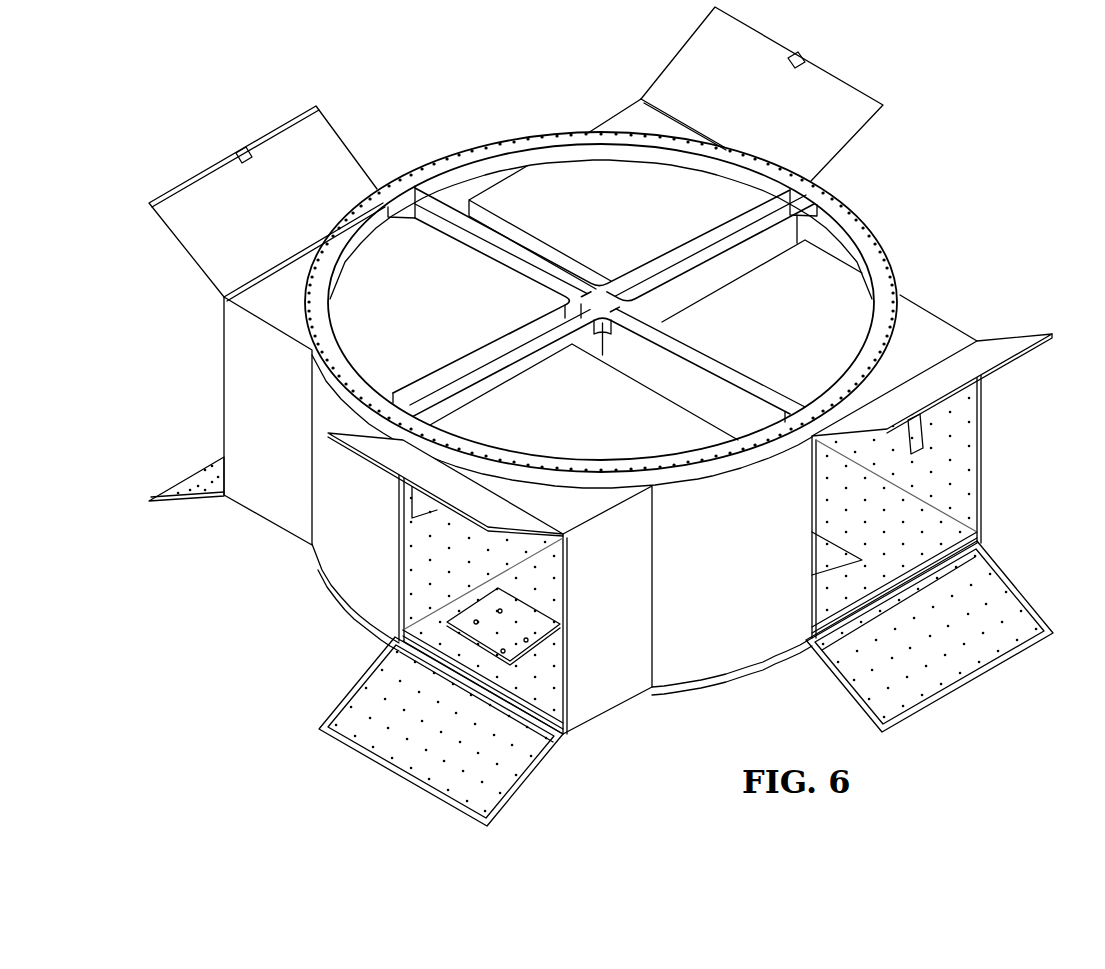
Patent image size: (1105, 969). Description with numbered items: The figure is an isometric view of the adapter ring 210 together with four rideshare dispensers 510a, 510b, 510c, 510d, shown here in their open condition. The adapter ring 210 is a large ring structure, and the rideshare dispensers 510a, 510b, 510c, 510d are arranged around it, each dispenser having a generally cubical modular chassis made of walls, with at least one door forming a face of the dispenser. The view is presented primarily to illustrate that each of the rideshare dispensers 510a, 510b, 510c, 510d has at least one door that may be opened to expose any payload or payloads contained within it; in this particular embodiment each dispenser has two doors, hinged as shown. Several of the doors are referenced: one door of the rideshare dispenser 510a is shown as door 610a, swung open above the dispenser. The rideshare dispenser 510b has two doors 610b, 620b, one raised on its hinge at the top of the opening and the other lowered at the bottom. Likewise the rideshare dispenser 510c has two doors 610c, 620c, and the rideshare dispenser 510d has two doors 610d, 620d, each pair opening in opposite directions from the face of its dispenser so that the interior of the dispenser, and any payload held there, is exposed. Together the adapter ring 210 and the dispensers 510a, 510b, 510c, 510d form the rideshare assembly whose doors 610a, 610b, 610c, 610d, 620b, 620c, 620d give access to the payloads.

The adapter ring 210 is at (934, 203).
The rideshare dispenser 510a is at (614, 118).
The rideshare dispenser 510b is at (940, 313).
The rideshare dispenser 510c is at (268, 520).
The rideshare dispenser 510d is at (602, 716).
The door 610a is at (850, 78).
The door 610b is at (1018, 332).
The door 610c is at (188, 178).
The door 610d is at (363, 466).
The door 620b is at (1020, 585).
The door 620c is at (174, 482).
The door 620d is at (533, 782).